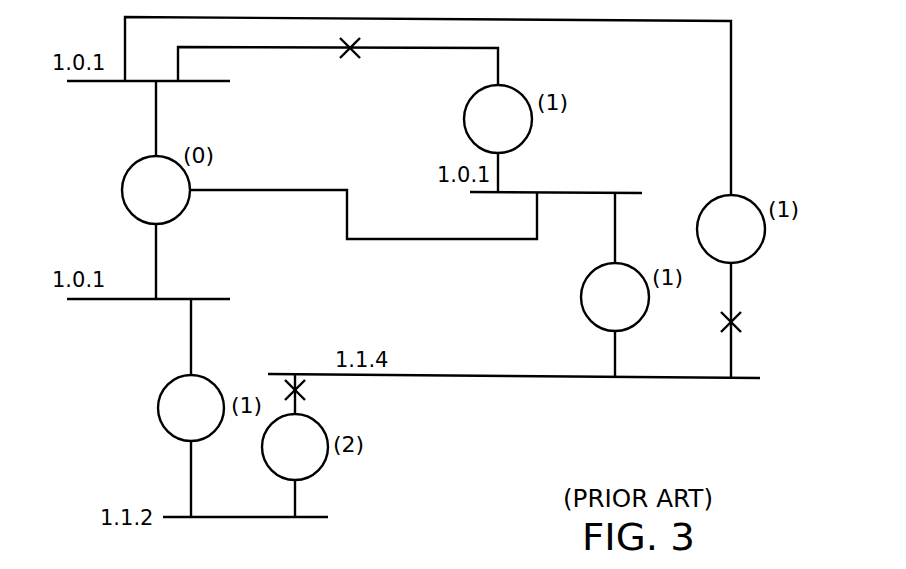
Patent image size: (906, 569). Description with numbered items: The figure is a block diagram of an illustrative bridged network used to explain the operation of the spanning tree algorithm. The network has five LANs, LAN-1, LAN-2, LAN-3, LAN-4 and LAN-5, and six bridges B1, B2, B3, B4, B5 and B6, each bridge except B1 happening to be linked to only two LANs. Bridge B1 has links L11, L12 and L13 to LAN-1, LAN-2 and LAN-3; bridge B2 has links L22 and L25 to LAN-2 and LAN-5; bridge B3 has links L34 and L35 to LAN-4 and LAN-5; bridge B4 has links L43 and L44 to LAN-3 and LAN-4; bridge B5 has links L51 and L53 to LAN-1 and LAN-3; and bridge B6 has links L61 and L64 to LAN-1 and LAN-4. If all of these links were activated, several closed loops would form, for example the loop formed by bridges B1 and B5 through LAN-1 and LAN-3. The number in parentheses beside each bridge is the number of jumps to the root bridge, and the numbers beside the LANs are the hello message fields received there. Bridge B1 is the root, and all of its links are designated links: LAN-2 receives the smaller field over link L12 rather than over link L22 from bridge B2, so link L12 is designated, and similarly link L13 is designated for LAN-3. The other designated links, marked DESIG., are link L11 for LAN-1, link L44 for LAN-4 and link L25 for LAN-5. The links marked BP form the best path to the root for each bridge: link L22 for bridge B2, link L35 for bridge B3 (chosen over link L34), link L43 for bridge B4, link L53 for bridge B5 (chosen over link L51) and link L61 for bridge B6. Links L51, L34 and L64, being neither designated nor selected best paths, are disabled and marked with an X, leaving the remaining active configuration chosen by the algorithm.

The local area network LAN-1 is at (189, 80).
The local area network LAN-2 is at (189, 298).
The local area network LAN-3 is at (590, 179).
The local area network LAN-4 is at (542, 365).
The local area network LAN-5 is at (288, 519).
The bridge B1 is at (156, 190).
The bridge B2 is at (191, 408).
The bridge B3 is at (295, 447).
The bridge B4 is at (615, 297).
The bridge B5 is at (498, 119).
The bridge B6 is at (731, 229).
The link L11 is at (240, 118).
The link L12 is at (240, 261).
The link L13 is at (363, 195).
The link L22 is at (124, 337).
The link L25 is at (102, 479).
The link L34 is at (330, 394).
The link L35 is at (361, 496).
The link L43 is at (535, 240).
The link L44 is at (523, 349).
The link L51 is at (378, 61).
The link L53 is at (570, 163).
The link L61 is at (428, 106).
The link L64 is at (766, 320).